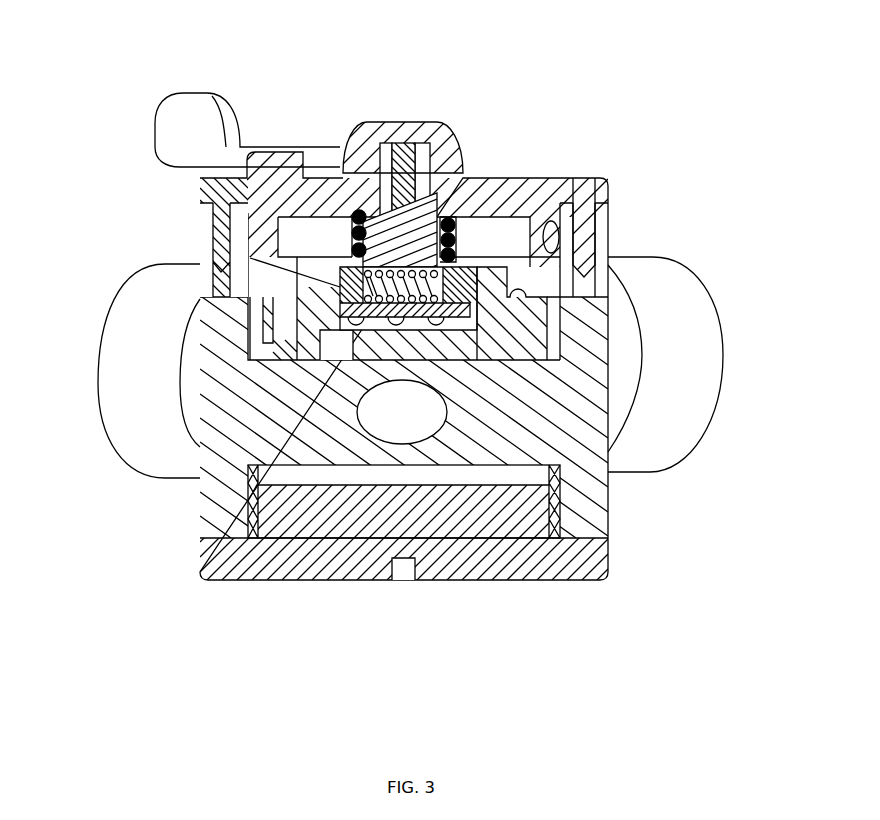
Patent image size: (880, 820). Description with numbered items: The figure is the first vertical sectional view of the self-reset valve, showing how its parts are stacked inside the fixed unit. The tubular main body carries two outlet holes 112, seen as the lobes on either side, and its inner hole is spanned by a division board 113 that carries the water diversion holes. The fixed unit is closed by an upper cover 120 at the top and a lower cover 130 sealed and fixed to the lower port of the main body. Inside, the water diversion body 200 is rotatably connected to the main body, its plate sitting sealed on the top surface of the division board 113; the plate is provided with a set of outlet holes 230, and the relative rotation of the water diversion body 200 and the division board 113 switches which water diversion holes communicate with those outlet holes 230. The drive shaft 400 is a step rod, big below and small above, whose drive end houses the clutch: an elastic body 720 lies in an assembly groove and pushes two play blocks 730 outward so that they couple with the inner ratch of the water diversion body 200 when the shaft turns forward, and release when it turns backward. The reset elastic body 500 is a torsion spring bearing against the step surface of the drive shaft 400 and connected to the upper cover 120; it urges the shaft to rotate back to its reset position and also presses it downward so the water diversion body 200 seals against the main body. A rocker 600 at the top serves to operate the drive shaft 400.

The outlet holes 112 is at (672, 383).
The division board 113 is at (510, 419).
The upper cover 120 is at (500, 195).
The lower cover 130 is at (290, 558).
The water diversion body 200 is at (503, 330).
The outlet holes 230 is at (300, 320).
The drive shaft 400 is at (417, 228).
The reset elastic body 500 is at (353, 213).
The rocker 600 is at (200, 143).
The elastic body 720 is at (560, 238).
The play blocks 730 is at (590, 178).